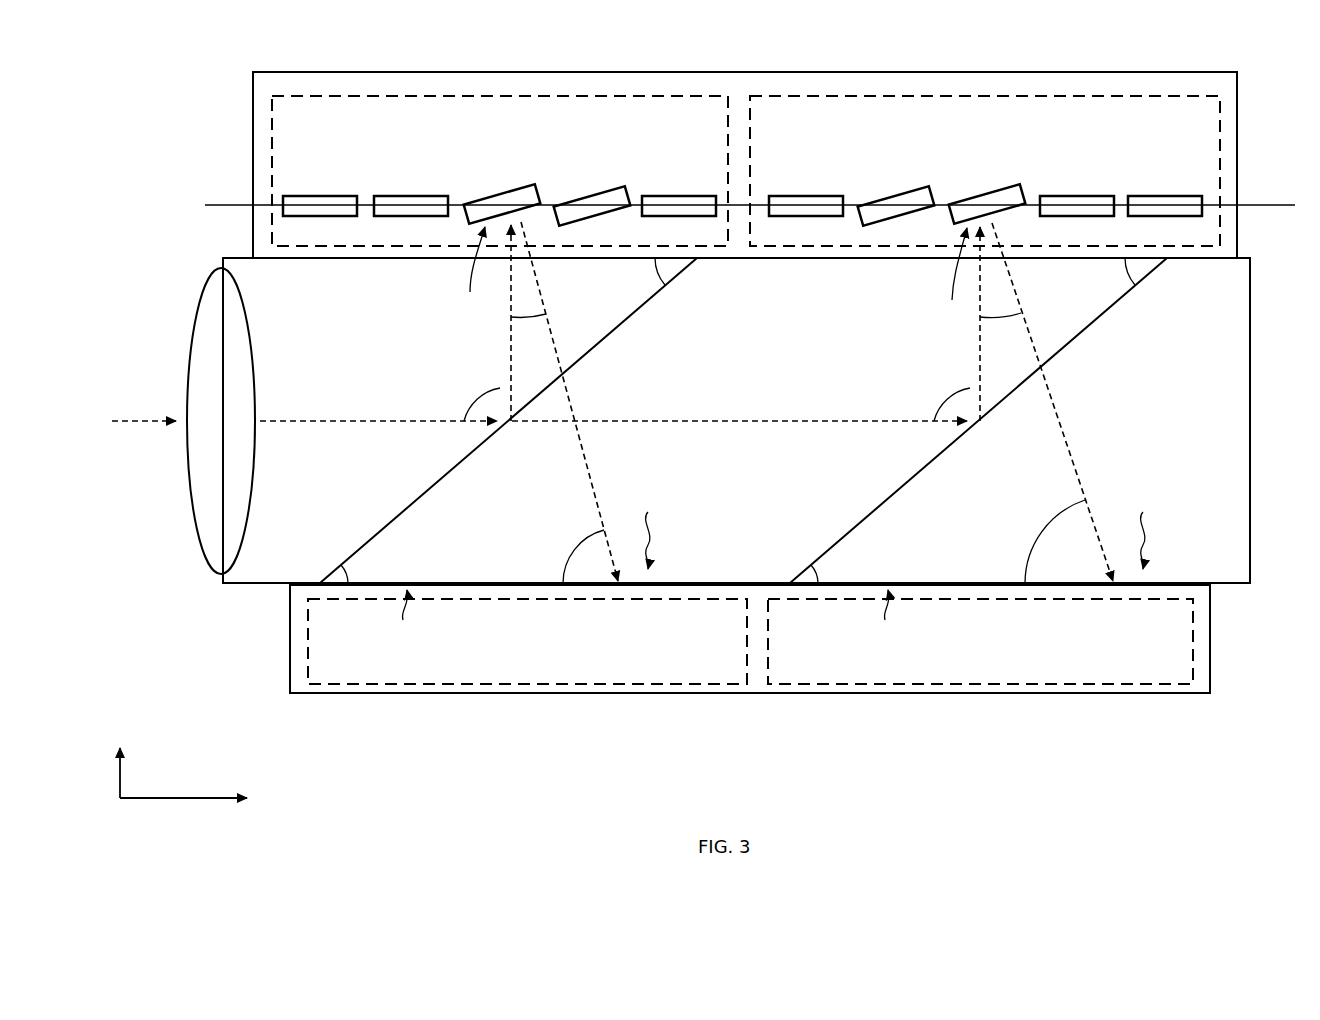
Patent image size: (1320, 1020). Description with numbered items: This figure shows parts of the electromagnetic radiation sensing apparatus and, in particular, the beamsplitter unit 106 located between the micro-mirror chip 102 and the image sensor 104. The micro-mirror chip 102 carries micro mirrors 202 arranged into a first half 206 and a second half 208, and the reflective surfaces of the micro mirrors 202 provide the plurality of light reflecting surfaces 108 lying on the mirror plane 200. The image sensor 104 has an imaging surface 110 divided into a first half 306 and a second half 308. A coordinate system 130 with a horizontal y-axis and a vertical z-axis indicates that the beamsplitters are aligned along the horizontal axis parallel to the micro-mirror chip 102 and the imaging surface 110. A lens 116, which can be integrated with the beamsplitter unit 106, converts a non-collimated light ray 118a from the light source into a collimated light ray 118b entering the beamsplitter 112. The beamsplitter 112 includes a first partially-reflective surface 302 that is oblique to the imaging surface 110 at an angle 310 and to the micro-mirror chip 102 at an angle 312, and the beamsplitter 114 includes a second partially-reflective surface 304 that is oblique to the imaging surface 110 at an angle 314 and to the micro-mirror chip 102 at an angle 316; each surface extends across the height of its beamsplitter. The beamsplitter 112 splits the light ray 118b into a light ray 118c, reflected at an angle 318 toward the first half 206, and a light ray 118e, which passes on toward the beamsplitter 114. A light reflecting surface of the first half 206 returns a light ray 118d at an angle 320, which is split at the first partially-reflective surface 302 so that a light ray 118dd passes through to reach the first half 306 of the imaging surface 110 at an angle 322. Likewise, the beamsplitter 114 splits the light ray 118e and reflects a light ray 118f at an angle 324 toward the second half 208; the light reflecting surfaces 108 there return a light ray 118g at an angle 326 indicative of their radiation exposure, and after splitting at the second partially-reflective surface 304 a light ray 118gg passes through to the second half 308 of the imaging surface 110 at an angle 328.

The micro-mirror chip 102 is at (745, 72).
The image sensor 104 is at (752, 693).
The beamsplitter unit 106 is at (227, 587).
The light reflecting surfaces 108 is at (702, 273).
The imaging surface 110 is at (899, 528).
The beamsplitter 112 is at (402, 616).
The beamsplitter 114 is at (885, 616).
The lens 116 is at (203, 287).
The non-collimated light ray 118a is at (140, 423).
The collimated light ray 118b is at (345, 420).
The light ray 118c is at (510, 323).
The light ray 118d is at (548, 302).
The light ray 118dd is at (582, 457).
The light ray 118e is at (728, 421).
The light ray 118f is at (978, 343).
The light ray 118g is at (1047, 298).
The light ray 118gg is at (1080, 478).
The coordinate system 130 is at (163, 797).
The mirror plane 200 is at (247, 205).
The micro mirrors 202 is at (534, 176).
The first half 206 is at (329, 129).
The second half 208 is at (812, 129).
The first partially-reflective surface 302 is at (441, 480).
The second partially-reflective surface 304 is at (898, 491).
The first half 306 is at (524, 651).
The second half 308 is at (989, 653).
The angle 310 is at (350, 570).
The angle 312 is at (658, 273).
The angle 314 is at (820, 570).
The angle 316 is at (1125, 273).
The angle 318 is at (470, 392).
The angle 320 is at (538, 318).
The angle 322 is at (566, 566).
The angle 324 is at (940, 392).
The angle 326 is at (1006, 318).
The angle 328 is at (1027, 566).